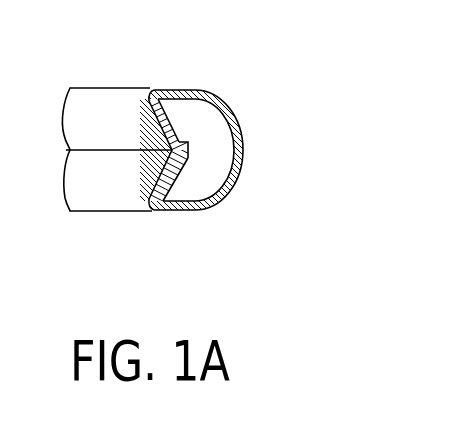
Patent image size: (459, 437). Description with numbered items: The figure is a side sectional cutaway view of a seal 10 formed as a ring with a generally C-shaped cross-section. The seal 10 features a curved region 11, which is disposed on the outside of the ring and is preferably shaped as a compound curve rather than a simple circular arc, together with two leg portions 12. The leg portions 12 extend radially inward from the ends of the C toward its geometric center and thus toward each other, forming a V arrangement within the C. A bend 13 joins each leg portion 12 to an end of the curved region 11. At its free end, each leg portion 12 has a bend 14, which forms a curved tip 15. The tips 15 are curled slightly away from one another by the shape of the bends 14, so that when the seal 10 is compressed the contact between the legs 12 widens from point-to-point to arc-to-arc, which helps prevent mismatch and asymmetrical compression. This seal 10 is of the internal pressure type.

The seal 10 is at (240, 85).
The curved region 11 is at (236, 184).
The leg portions 12 is at (160, 125).
The bend 13 is at (150, 99).
The bend 14 is at (197, 92).
The curved tip 15 is at (189, 143).